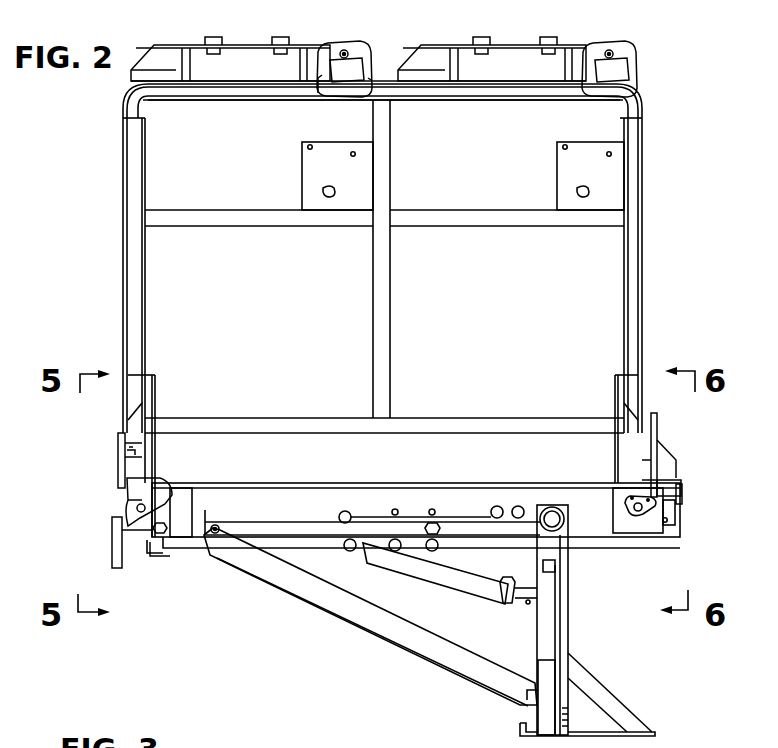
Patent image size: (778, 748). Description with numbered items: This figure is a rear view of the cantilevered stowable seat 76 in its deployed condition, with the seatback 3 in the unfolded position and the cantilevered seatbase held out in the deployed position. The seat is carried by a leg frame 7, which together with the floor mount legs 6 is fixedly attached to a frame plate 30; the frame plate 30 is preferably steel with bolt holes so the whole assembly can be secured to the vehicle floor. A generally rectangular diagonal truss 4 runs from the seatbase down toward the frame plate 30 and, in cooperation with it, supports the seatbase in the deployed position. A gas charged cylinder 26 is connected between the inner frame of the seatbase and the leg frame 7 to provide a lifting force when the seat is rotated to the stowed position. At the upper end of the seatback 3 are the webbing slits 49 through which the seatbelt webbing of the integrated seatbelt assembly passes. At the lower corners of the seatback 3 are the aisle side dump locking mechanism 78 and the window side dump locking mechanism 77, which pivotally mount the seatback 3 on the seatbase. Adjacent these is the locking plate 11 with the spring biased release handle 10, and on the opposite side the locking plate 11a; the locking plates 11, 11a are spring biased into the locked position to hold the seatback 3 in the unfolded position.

The seatback 3 is at (640, 92).
The diagonal truss 4 is at (340, 618).
The floor mount legs 6 is at (625, 706).
The leg frame 7 is at (572, 618).
The spring biased release handle 10 is at (112, 532).
The locking plate 11 is at (140, 480).
The locking plate 11a is at (648, 478).
The gas charged cylinder 26 is at (420, 580).
The frame plate 30 is at (615, 738).
The webbing slit 49 is at (340, 44).
The cantilevered stowable seat 76 is at (660, 152).
The window side dump locking mechanism 77 is at (666, 448).
The aisle side dump locking mechanism 78 is at (118, 432).